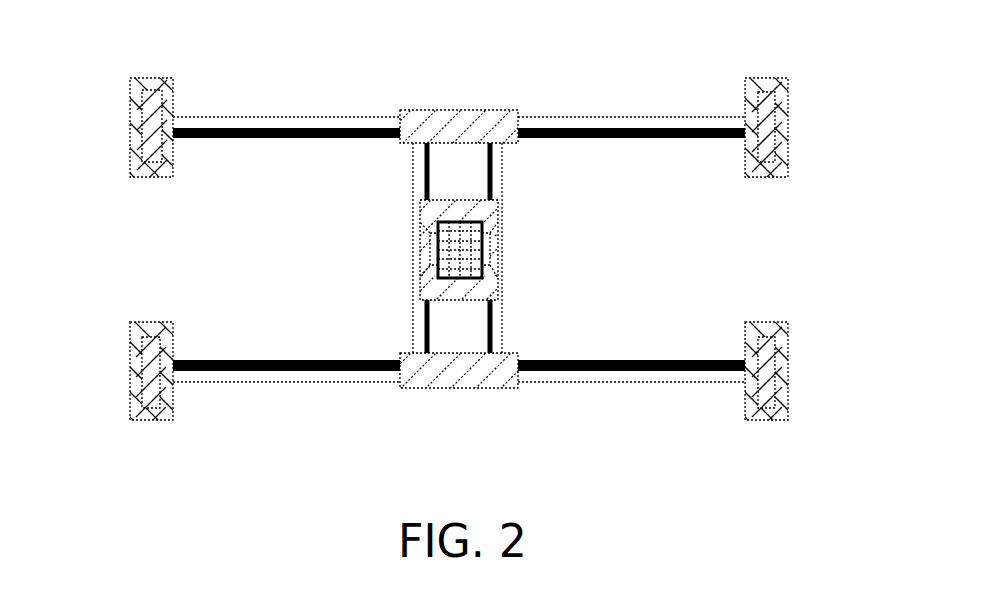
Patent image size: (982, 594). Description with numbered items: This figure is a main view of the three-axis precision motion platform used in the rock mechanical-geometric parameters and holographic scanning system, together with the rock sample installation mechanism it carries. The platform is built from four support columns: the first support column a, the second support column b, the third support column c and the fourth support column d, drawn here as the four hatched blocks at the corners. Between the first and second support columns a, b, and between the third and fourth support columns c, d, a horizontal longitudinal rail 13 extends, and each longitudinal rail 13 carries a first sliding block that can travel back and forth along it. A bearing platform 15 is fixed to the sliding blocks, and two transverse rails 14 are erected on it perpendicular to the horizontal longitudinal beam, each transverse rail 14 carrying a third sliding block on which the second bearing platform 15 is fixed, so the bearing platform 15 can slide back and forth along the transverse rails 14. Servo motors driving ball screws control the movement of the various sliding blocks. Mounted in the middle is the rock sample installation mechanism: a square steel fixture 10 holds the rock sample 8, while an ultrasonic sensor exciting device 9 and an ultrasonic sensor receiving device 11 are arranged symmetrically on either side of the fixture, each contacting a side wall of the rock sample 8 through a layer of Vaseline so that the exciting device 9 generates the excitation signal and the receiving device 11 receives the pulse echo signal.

The first support column a is at (150, 368).
The second support column b is at (768, 380).
The third support column c is at (160, 130).
The fourth support column d is at (765, 125).
The rock sample 8 is at (437, 243).
The ultrasonic sensor exciting device 9 is at (437, 257).
The square steel fixture 10 is at (437, 223).
The ultrasonic sensor receiving device 11 is at (485, 247).
The longitudinal rail 13 is at (265, 128).
The transverse rail 14 is at (480, 212).
The bearing platform 15 is at (485, 285).